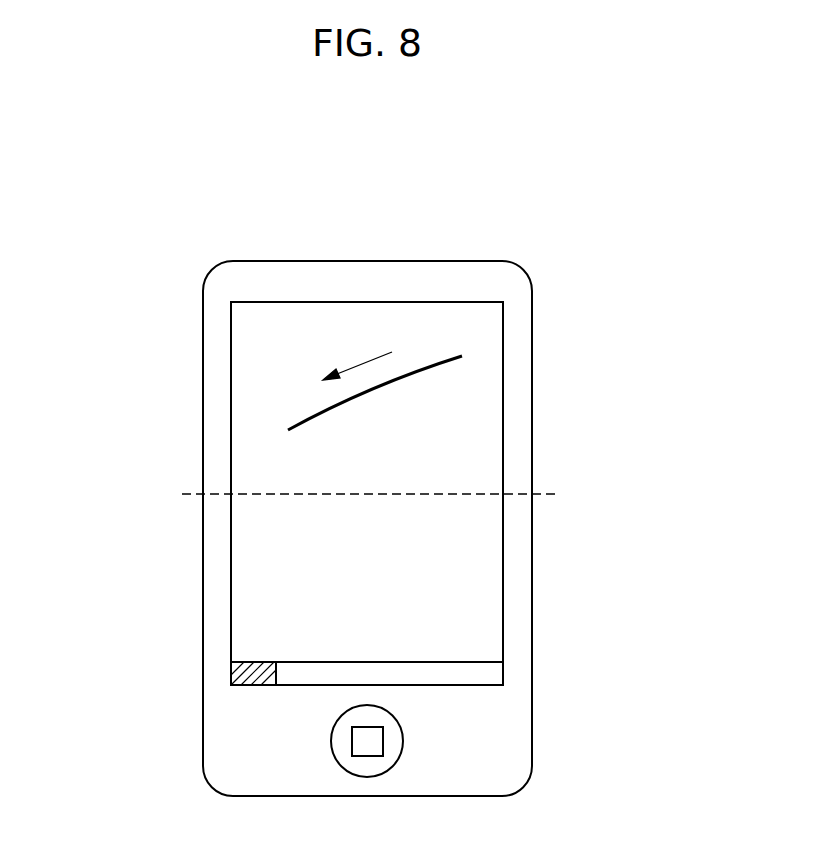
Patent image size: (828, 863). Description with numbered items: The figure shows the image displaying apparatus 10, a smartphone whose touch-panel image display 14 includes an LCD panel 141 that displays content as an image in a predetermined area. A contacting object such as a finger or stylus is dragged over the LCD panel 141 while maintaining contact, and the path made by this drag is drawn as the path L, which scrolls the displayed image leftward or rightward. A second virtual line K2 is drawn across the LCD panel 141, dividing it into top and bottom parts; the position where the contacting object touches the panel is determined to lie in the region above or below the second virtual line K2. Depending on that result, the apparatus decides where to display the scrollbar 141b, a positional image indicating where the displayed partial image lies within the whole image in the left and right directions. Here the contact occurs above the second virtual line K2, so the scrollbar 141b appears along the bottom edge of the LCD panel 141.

The image displaying apparatus 10 is at (538, 227).
The image display 14 is at (230, 375).
The LCD panel 141 is at (253, 462).
The scrollbar 141b is at (465, 668).
The path L is at (428, 367).
The second virtual line K2 is at (548, 490).